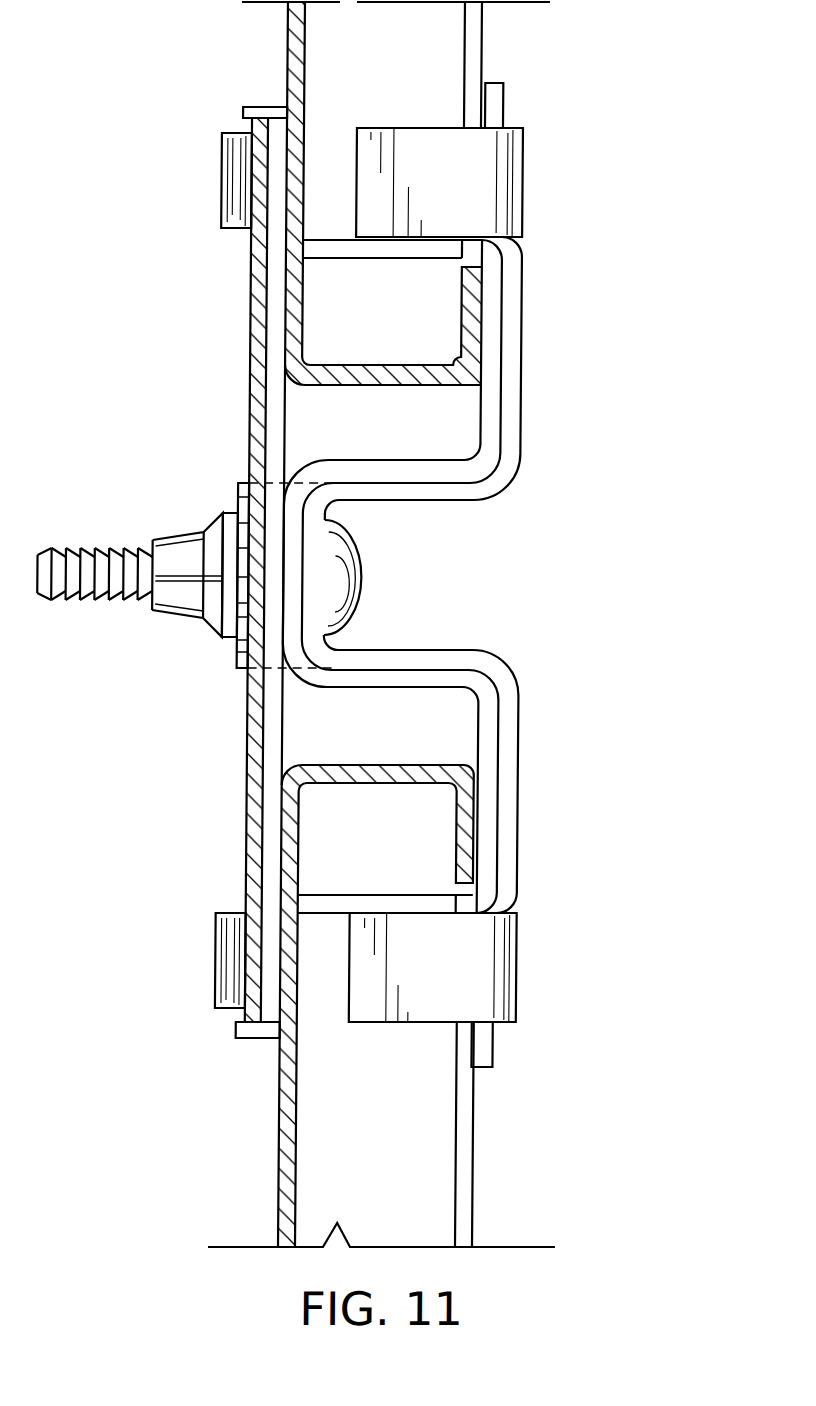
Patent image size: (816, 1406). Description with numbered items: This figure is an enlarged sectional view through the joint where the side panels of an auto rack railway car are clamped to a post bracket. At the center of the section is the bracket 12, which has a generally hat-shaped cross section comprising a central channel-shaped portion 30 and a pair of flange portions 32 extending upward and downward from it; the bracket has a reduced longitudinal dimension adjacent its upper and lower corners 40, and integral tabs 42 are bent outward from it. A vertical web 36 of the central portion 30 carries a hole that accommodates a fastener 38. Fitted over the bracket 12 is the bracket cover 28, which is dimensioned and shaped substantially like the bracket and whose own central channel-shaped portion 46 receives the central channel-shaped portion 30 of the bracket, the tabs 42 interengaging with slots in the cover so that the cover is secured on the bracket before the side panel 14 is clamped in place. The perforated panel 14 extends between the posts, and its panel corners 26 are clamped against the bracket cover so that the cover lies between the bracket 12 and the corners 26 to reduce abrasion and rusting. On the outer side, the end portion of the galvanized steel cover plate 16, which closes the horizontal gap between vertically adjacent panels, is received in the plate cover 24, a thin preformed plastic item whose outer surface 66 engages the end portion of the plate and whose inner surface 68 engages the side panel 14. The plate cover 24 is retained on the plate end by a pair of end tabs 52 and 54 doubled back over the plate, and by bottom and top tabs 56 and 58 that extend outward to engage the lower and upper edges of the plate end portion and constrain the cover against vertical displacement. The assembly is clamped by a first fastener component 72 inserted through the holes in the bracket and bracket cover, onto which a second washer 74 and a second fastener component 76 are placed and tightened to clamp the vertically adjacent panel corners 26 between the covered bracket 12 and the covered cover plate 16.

The bracket 12 is at (520, 428).
The perforated panel 14 is at (288, 53).
The cover plate 16 is at (253, 380).
The plate cover 24 is at (293, 423).
The panel corner 26 is at (355, 365).
The bracket cover 28 is at (414, 468).
The central channel-shaped portion 30 is at (440, 660).
The flange portion 32 is at (514, 352).
The vertical web 36 is at (365, 623).
The fastener 38 is at (88, 593).
The upper and lower corners 40 is at (524, 128).
The integral tab 42 is at (477, 190).
The central channel-shaped portion 46 is at (301, 630).
The end tab 52 is at (223, 165).
The end tab 54 is at (223, 958).
The bottom tab 56 is at (266, 1040).
The top tab 58 is at (262, 107).
The outer surface 66 is at (254, 322).
The inner surface 68 is at (290, 717).
The first fastener component 72 is at (93, 547).
The second washer 74 is at (240, 488).
The second fastener component 76 is at (172, 533).